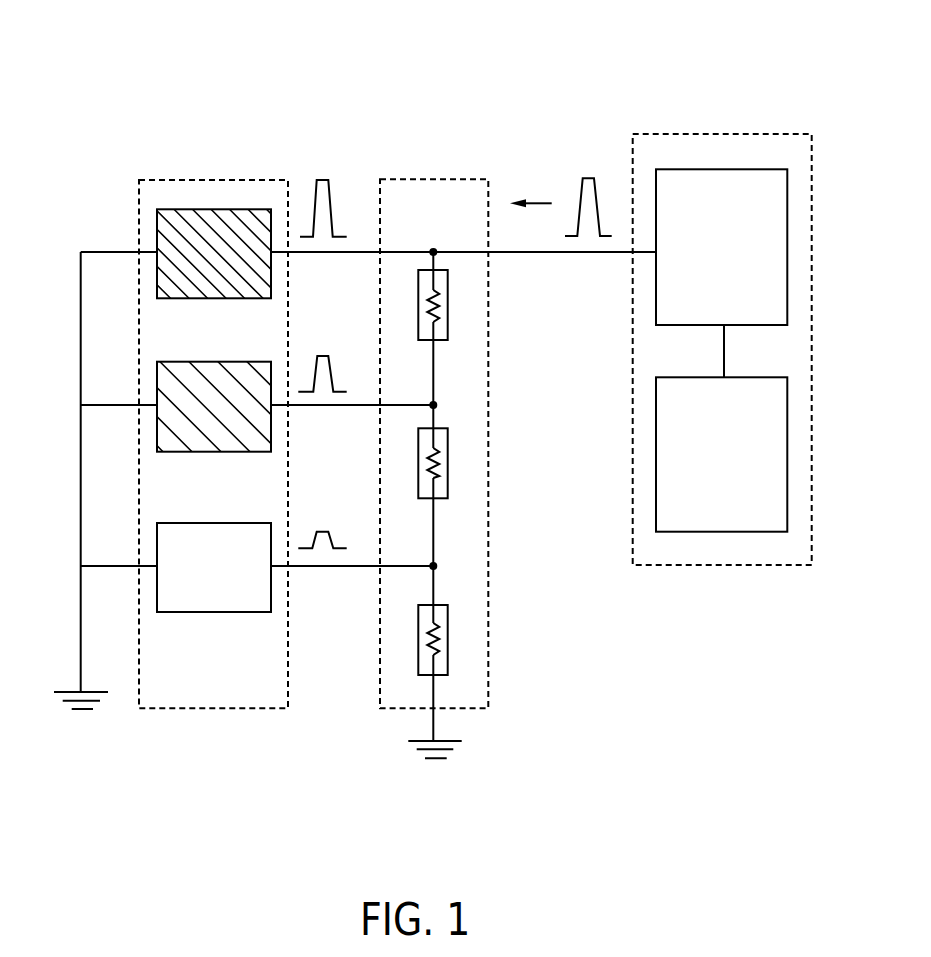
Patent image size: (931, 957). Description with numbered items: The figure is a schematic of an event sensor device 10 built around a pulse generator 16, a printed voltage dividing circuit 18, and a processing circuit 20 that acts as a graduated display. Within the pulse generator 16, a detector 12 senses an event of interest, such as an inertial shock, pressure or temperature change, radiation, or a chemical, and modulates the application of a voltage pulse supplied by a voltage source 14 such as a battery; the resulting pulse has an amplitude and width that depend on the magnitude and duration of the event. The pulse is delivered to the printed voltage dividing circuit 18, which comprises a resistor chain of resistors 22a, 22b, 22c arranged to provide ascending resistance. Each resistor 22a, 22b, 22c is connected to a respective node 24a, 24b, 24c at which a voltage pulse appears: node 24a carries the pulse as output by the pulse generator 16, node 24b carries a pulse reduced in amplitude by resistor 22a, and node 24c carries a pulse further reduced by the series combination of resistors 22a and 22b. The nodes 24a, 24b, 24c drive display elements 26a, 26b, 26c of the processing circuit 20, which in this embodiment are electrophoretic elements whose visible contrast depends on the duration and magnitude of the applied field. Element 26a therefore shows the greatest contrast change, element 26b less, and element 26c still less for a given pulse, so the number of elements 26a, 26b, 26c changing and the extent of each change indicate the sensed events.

The event sensor device 10 is at (100, 75).
The detector 12 is at (733, 258).
The voltage source 14 is at (733, 464).
The pulse generator 16 is at (723, 570).
The printed voltage dividing circuit 18 is at (437, 175).
The processing circuit 20 is at (218, 177).
The resistor 22a is at (448, 303).
The resistor 22b is at (448, 460).
The resistor 22c is at (448, 636).
The node 24a is at (441, 254).
The node 24b is at (441, 407).
The node 24c is at (441, 568).
The display element 26a is at (215, 298).
The display element 26b is at (215, 452).
The display element 26c is at (215, 612).